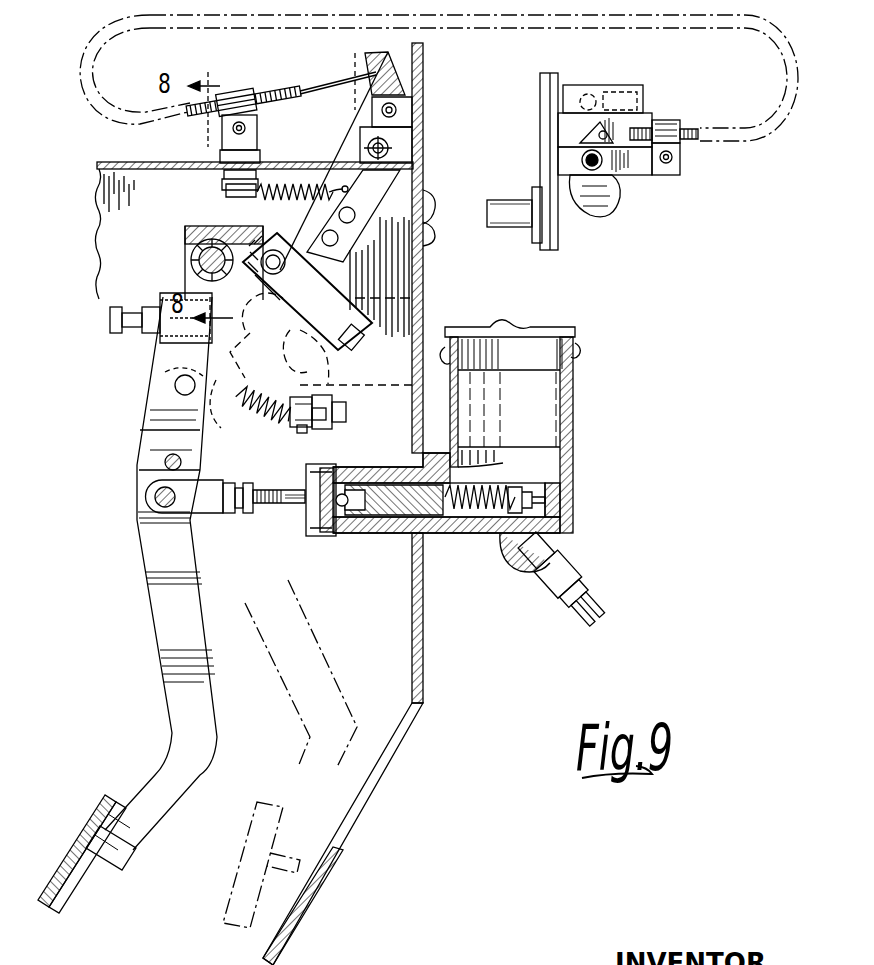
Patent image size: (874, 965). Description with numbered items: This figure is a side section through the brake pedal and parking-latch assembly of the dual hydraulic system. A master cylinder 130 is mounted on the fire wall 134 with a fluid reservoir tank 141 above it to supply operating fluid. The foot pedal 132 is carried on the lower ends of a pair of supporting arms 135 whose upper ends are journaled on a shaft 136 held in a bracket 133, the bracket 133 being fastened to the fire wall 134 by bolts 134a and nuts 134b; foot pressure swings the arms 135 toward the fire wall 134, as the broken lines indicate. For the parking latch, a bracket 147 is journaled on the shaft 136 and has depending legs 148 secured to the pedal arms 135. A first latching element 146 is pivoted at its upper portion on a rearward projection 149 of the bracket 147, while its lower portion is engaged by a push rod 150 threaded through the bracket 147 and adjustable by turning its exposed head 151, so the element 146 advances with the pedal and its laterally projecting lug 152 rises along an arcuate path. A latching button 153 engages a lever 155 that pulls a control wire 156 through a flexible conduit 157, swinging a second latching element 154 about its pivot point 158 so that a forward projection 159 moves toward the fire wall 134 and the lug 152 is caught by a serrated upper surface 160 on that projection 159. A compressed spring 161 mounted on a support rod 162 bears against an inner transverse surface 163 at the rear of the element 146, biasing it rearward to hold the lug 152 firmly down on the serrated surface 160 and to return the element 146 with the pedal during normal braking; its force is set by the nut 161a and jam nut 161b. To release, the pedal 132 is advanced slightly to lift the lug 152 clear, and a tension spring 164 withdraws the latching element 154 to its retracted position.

The master cylinder 130 is at (458, 536).
The foot pedal 132 is at (82, 804).
The bracket 133 is at (100, 178).
The fire wall 134 is at (429, 640).
The bolt 134a is at (429, 194).
The nut 134b is at (410, 236).
The supporting arm 135 is at (167, 642).
The shaft 136 is at (196, 262).
The fluid reservoir tank 141 is at (573, 382).
The first latching element 146 is at (334, 412).
The bracket 147 is at (158, 382).
The depending leg 148 is at (160, 426).
The rearward projection 149 is at (262, 240).
The push rod 150 is at (228, 317).
The exposed head 151 is at (108, 320).
The lug 152 is at (356, 374).
The latching button 153 is at (493, 190).
The second latching element 154 is at (315, 240).
The lever 155 is at (600, 198).
The control wire 156 is at (344, 82).
The flexible conduit 157 is at (299, 95).
The pivot point 158 is at (388, 147).
The forward projection 159 is at (318, 368).
The serrated upper surface 160 is at (415, 298).
The compressed spring 161 is at (252, 424).
The nut 161a is at (320, 432).
The jam nut 161b is at (300, 414).
The support rod 162 is at (211, 414).
The inner transverse surface 163 is at (304, 334).
The tension spring 164 is at (288, 186).